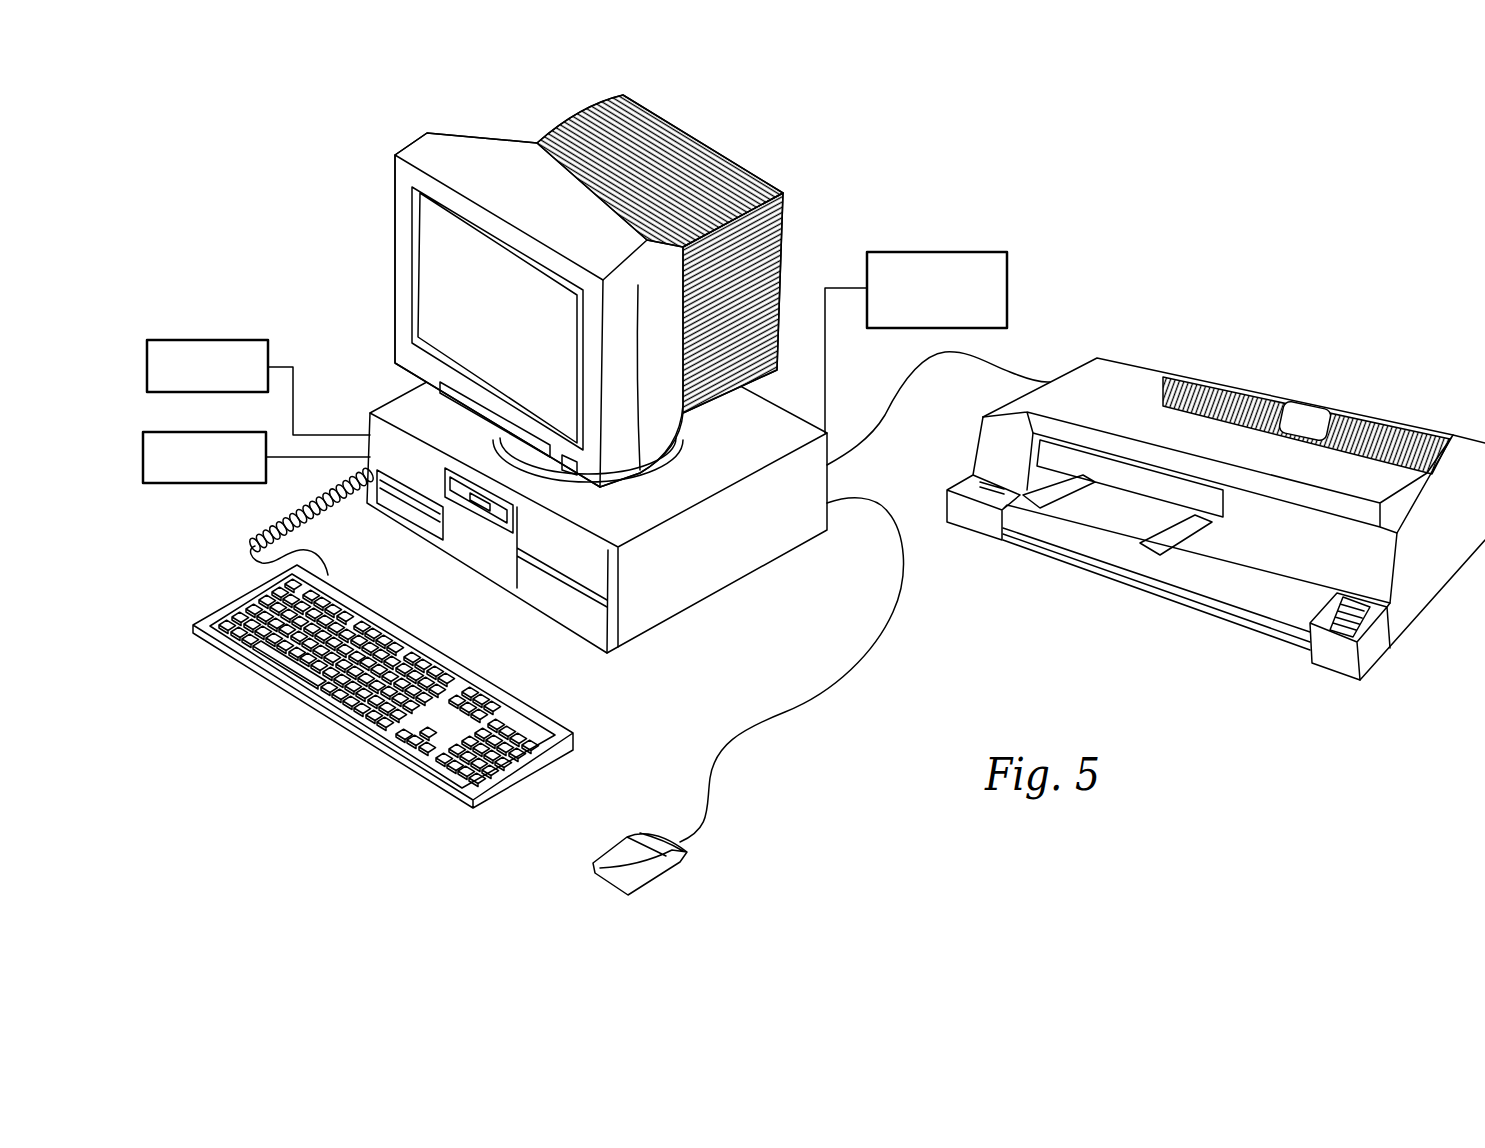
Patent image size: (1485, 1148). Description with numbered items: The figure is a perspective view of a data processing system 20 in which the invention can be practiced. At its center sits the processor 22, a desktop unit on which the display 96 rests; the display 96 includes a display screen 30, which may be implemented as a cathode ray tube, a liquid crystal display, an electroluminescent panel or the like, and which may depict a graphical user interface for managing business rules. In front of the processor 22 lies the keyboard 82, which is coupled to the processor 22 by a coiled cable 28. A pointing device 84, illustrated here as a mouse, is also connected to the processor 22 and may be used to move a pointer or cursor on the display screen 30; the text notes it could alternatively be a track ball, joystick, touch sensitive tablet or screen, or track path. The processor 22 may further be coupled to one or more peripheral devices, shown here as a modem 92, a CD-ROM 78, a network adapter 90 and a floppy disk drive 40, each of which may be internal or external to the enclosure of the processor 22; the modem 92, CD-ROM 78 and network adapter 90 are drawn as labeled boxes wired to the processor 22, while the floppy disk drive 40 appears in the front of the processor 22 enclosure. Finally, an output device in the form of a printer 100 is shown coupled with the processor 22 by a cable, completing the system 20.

The data processing system 20 is at (987, 159).
The processor 22 is at (597, 495).
The cable 28 is at (280, 519).
The display screen 30 is at (521, 331).
The floppy disk drive 40 is at (476, 500).
The CD-ROM 78 is at (196, 432).
The keyboard 82 is at (383, 637).
The pointing device 84 is at (680, 864).
The network adapter 90 is at (1007, 268).
The modem 92 is at (200, 340).
The display 96 is at (525, 291).
The printer 100 is at (1174, 354).